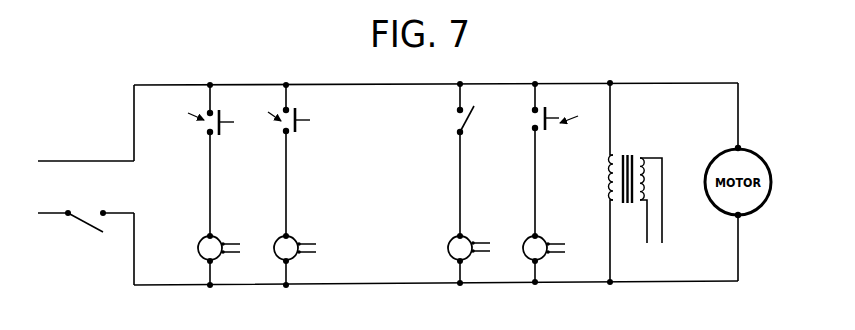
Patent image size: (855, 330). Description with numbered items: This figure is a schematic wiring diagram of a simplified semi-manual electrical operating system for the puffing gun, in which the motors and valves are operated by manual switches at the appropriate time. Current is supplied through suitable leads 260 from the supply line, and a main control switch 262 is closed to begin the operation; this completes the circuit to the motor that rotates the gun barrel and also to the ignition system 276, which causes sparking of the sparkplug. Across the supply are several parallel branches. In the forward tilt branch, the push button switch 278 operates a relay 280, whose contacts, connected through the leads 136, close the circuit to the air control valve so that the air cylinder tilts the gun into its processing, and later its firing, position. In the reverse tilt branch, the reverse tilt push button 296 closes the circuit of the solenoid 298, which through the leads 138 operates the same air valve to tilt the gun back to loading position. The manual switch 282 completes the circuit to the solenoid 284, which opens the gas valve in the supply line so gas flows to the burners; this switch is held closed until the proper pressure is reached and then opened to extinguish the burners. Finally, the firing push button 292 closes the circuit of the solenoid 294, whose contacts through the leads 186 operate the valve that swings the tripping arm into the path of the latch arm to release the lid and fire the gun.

The leads 260 is at (97, 160).
The main control switch 262 is at (89, 238).
The push button switch 278 is at (214, 136).
The relay 280 is at (217, 239).
The leads 136 is at (229, 253).
The reverse tilt push button 296 is at (290, 136).
The solenoid 298 is at (291, 240).
The leads 138 is at (305, 253).
The manual switch 282 is at (468, 127).
The solenoid 284 is at (469, 253).
The firing push button 292 is at (540, 133).
The solenoid 294 is at (541, 239).
The leads 186 is at (557, 253).
The ignition system 276 is at (658, 157).